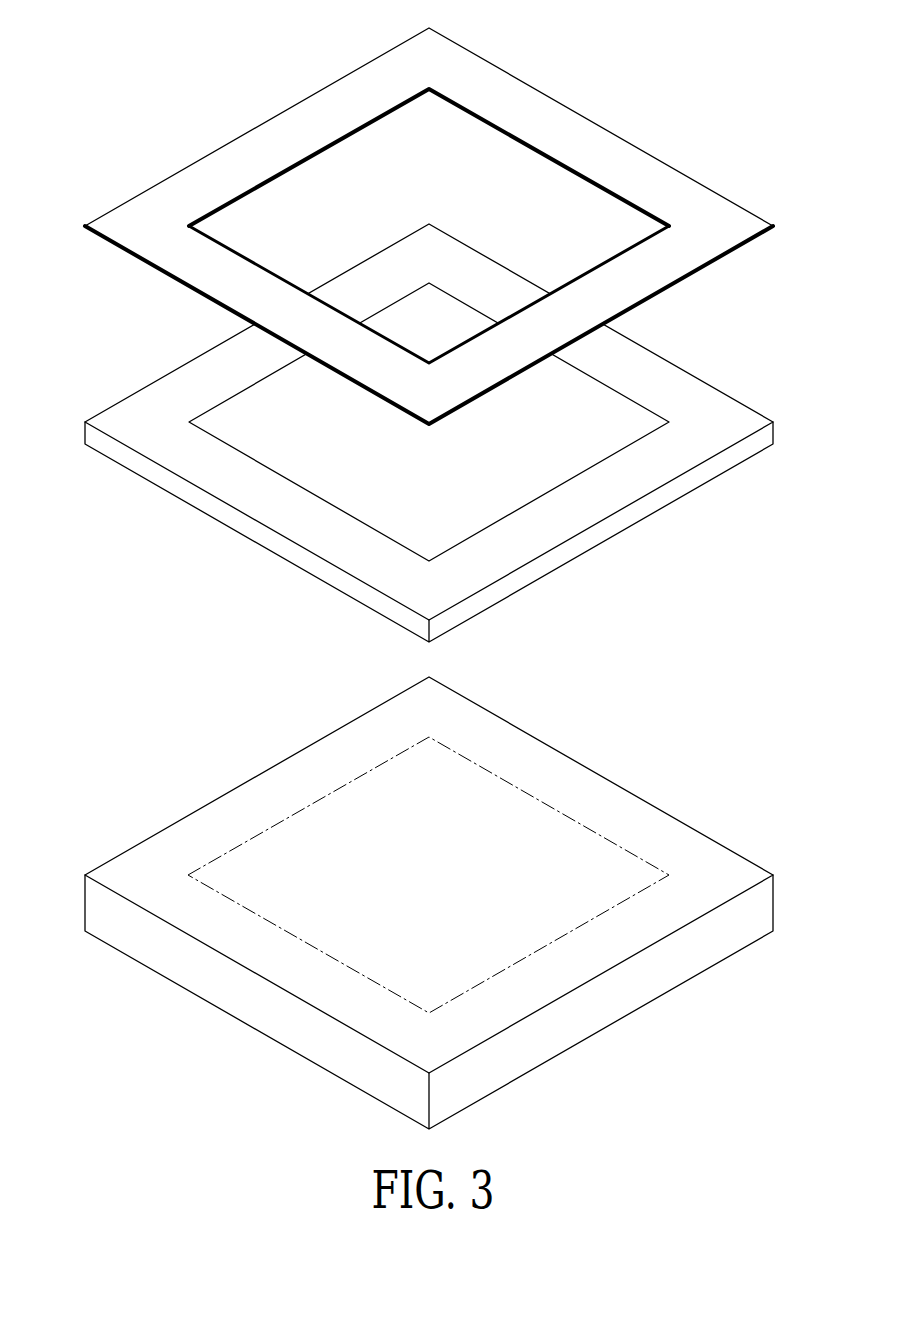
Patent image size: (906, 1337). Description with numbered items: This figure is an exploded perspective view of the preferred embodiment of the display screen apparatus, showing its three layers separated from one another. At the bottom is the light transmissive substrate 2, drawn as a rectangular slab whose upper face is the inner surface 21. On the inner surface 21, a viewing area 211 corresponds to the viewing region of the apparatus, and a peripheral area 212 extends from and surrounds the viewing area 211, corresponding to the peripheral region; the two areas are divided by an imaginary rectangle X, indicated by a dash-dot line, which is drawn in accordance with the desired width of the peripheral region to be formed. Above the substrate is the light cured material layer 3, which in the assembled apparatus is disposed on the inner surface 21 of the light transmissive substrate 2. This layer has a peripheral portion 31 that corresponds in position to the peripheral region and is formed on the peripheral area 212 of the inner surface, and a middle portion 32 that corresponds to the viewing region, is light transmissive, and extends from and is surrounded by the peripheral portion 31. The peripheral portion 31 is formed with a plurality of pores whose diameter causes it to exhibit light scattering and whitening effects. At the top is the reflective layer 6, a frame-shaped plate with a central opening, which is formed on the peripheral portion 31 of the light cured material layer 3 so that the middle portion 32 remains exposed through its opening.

The light transmissive substrate 2 is at (429, 878).
The inner surface 21 is at (429, 875).
The viewing area 211 is at (470, 830).
The peripheral area 212 is at (607, 805).
The imaginary rectangle X is at (333, 792).
The light cured material layer 3 is at (423, 433).
The peripheral portion 31 is at (677, 398).
The middle portion 32 is at (525, 435).
The reflective layer 6 is at (237, 133).